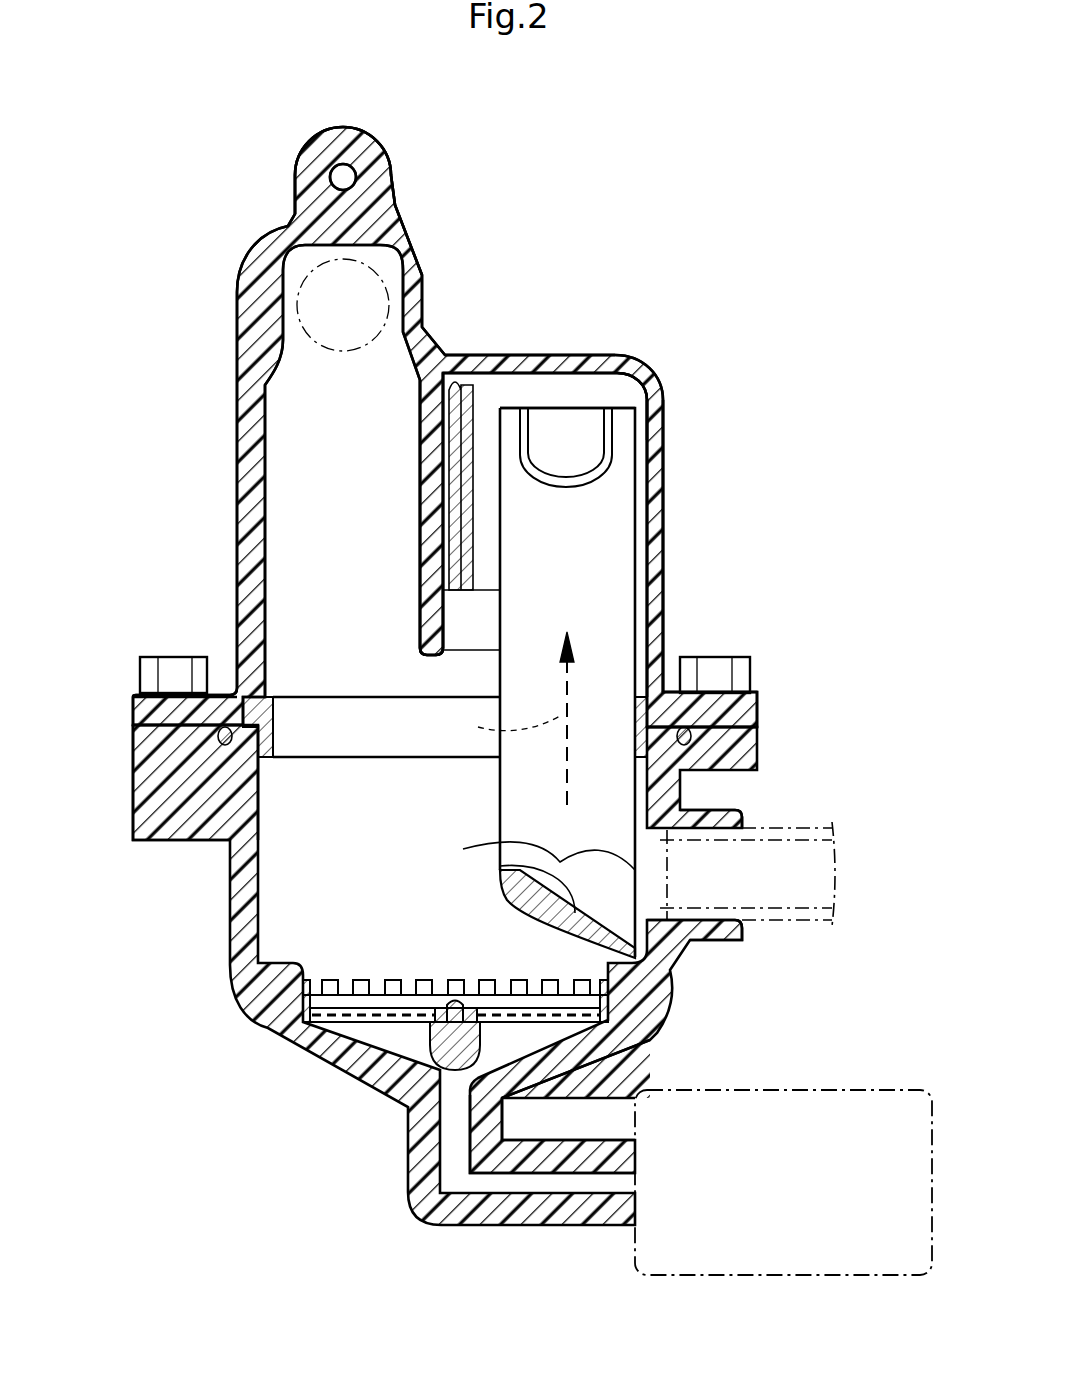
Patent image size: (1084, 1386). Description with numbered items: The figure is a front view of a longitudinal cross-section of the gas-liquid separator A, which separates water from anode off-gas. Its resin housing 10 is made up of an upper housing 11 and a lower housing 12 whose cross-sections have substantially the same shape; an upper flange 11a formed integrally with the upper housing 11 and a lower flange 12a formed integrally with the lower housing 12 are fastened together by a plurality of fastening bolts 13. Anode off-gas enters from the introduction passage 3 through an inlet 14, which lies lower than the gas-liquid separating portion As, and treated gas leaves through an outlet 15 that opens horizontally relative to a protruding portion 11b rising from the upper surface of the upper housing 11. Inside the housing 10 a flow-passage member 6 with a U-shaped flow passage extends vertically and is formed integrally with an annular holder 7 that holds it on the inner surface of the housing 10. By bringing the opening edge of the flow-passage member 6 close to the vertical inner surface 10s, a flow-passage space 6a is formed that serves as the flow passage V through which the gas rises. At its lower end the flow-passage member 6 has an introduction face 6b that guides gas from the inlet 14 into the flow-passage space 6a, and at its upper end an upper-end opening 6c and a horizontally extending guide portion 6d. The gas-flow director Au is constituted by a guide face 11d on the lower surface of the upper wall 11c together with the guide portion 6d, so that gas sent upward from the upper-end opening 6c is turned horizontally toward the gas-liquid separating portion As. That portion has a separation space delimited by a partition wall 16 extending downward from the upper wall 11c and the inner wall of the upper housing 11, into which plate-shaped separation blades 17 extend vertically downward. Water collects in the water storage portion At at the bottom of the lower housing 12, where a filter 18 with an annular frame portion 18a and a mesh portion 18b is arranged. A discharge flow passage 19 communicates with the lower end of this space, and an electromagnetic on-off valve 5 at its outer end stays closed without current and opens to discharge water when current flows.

The introduction passage 3 is at (792, 827).
The electromagnetic on-off valve 5 is at (830, 1275).
The flow-passage member 6 is at (503, 790).
The flow-passage space 6a is at (598, 877).
The introduction face 6b is at (532, 873).
The upper-end opening 6c is at (551, 404).
The guide portion 6d is at (548, 447).
The annular holder 7 is at (265, 700).
The housing 10 is at (236, 326).
The vertical inner surface 10s is at (652, 540).
The upper housing 11 is at (243, 452).
The upper flange 11a is at (137, 708).
The protruding portion 11b is at (407, 253).
The upper wall 11c is at (518, 365).
The guide face 11d is at (585, 385).
The lower housing 12 is at (230, 942).
The lower flange 12a is at (138, 773).
The fastening bolts 13 is at (175, 657).
The inlet 14 is at (728, 912).
The outlet 15 is at (345, 332).
The partition wall 16 is at (430, 470).
The separation blades 17 is at (462, 530).
The filter 18 is at (450, 980).
The frame portion 18a is at (308, 980).
The mesh portion 18b is at (364, 1013).
The discharge flow passage 19 is at (540, 1185).
The gas-liquid separator A is at (698, 240).
The gas-flow director Au is at (614, 398).
The gas-liquid separating portion As is at (485, 512).
The water storage portion At is at (373, 846).
The flow passage V is at (503, 723).